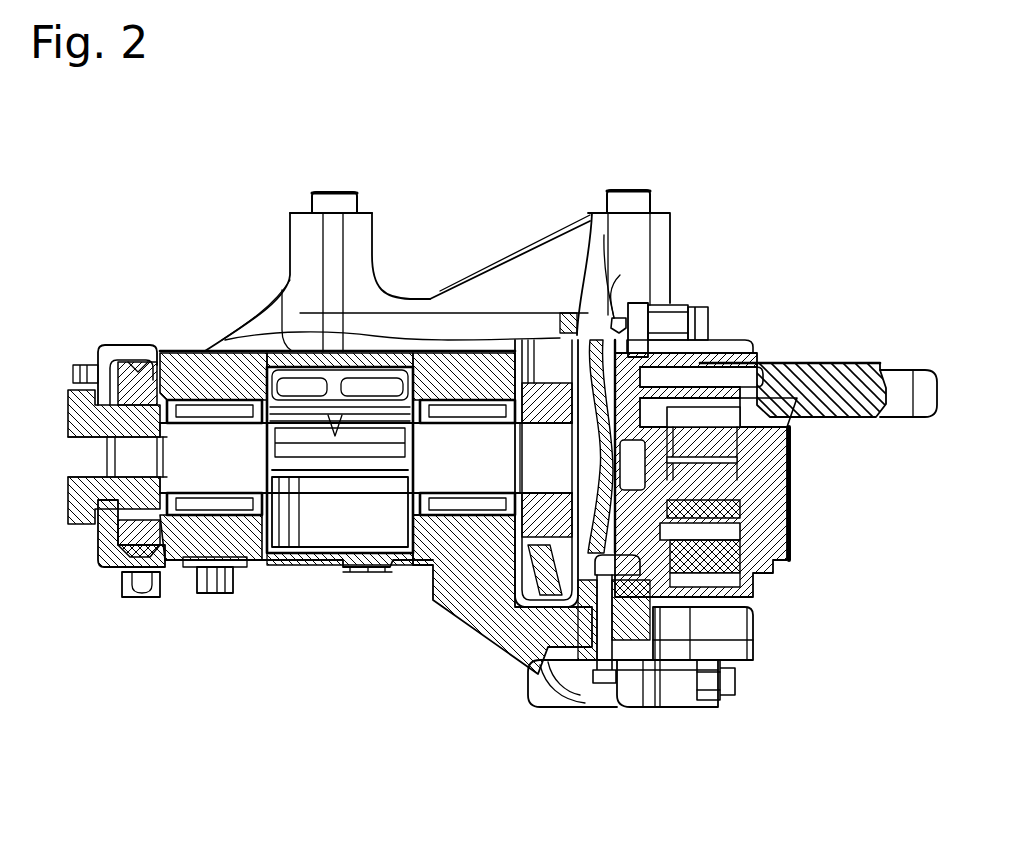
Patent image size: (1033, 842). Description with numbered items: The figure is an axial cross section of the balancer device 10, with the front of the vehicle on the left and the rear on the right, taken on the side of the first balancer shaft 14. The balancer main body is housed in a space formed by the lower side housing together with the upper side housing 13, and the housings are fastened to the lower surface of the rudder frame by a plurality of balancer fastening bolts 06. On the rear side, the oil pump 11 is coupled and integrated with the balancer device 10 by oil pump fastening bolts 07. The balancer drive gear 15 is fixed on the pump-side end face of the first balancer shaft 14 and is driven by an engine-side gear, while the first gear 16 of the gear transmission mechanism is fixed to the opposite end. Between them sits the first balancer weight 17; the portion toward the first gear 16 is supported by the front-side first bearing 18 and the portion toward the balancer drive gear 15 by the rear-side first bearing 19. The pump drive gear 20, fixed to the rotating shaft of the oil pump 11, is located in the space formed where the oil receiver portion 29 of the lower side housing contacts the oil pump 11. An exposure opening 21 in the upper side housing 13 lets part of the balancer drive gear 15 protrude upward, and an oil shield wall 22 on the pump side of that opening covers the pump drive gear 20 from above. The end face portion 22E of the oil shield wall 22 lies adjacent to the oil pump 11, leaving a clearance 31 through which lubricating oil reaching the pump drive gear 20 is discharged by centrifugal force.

The balancer device 10 is at (392, 266).
The oil pump 11 is at (821, 357).
The upper side housing 13 is at (181, 356).
The first balancer shaft 14 is at (482, 472).
The balancer drive gear 15 is at (548, 315).
The first gear 16 is at (123, 358).
The first balancer weight 17 is at (327, 530).
The front-side first bearing 18 is at (225, 503).
The rear-side first bearing 19 is at (462, 502).
The pump drive gear 20 is at (790, 512).
The exposure opening 21 is at (505, 305).
The oil shield wall 22 is at (592, 290).
The end face portion 22E is at (620, 275).
The oil receiver portion 29 is at (598, 684).
The clearance 31 is at (702, 320).
The balancer fastening bolts 06 is at (148, 600).
The oil pump fastening bolts 07 is at (735, 687).